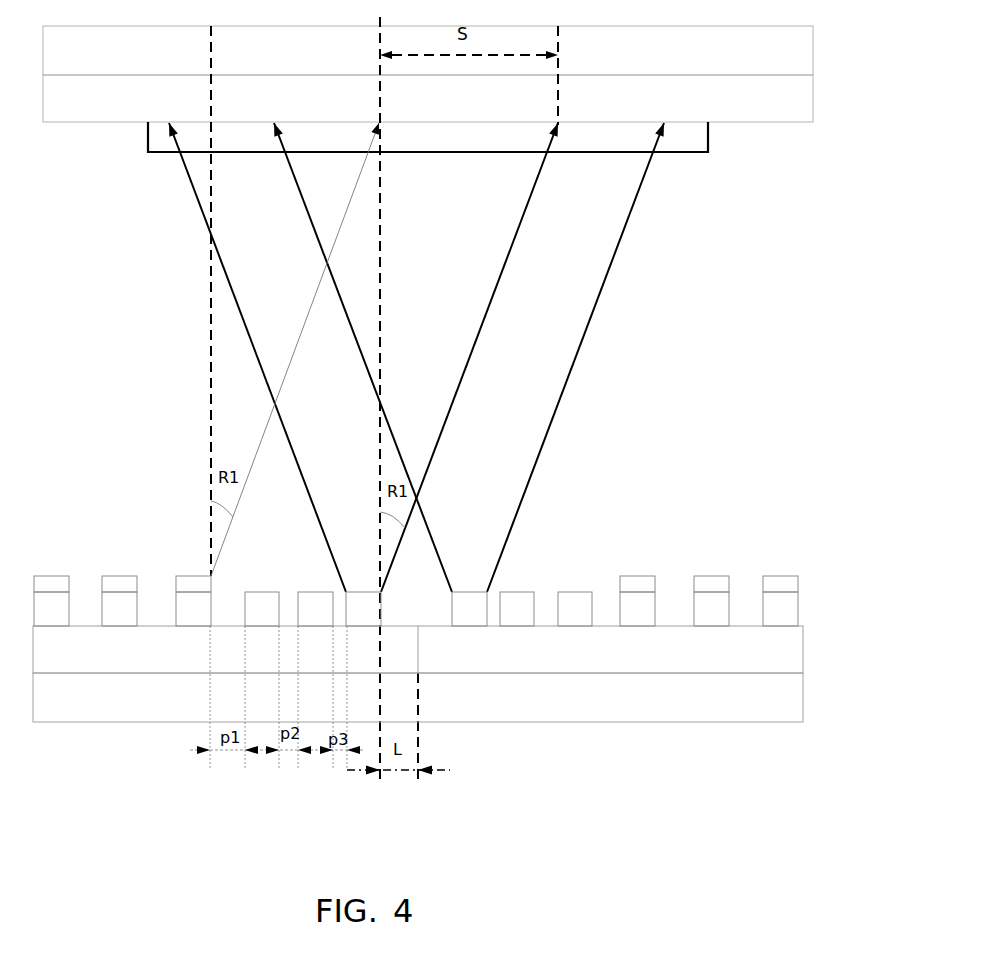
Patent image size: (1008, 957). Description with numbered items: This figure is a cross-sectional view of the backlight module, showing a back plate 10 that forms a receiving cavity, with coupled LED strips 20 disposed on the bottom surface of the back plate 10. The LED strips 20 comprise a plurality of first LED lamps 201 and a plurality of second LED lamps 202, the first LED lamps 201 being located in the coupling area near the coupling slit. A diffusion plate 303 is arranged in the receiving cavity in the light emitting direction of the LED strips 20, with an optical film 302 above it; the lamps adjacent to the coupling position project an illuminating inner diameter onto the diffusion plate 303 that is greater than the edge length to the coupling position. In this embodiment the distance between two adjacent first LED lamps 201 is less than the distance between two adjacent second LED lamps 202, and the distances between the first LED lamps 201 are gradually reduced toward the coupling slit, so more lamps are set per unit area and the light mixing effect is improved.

The optical film 302 is at (773, 55).
The diffusion plate 303 is at (773, 108).
The first LED lamp 201 is at (574, 608).
The LED strip 20 is at (815, 592).
The second LED lamp 202 is at (780, 607).
The back plate 10 is at (803, 720).